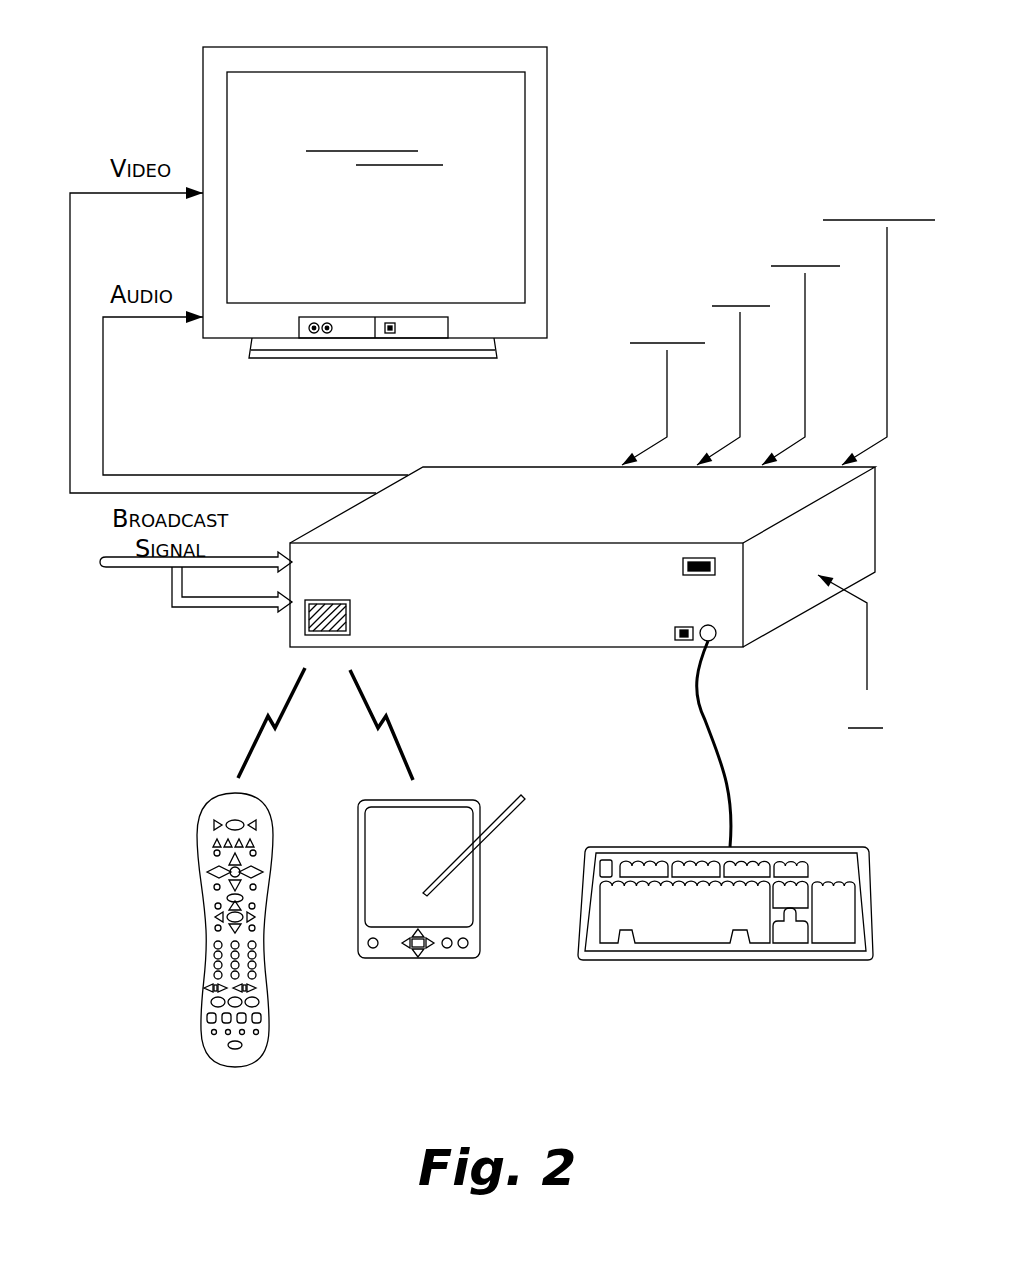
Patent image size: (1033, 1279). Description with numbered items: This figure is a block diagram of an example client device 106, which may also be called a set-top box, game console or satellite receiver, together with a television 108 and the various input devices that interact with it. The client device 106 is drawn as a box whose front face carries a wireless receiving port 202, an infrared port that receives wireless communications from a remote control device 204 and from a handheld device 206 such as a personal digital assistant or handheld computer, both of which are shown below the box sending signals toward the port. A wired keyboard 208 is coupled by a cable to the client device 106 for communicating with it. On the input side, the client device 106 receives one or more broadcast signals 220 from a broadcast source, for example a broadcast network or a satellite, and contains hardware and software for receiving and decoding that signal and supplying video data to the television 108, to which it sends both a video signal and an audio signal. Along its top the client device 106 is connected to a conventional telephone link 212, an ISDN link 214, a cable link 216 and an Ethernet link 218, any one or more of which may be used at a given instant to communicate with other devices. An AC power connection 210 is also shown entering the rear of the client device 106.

The client device 106 is at (487, 467).
The television 108 is at (494, 291).
The wireless receiving port 202 is at (340, 600).
The remote control device 204 is at (200, 823).
The handheld device 206 is at (437, 797).
The wired keyboard 208 is at (775, 847).
The AC power input 210 is at (866, 652).
The telephone link 212 is at (668, 305).
The ISDN link 214 is at (741, 265).
The cable link 216 is at (798, 237).
The Ethernet link 218 is at (877, 185).
The broadcast signal 220 is at (125, 567).